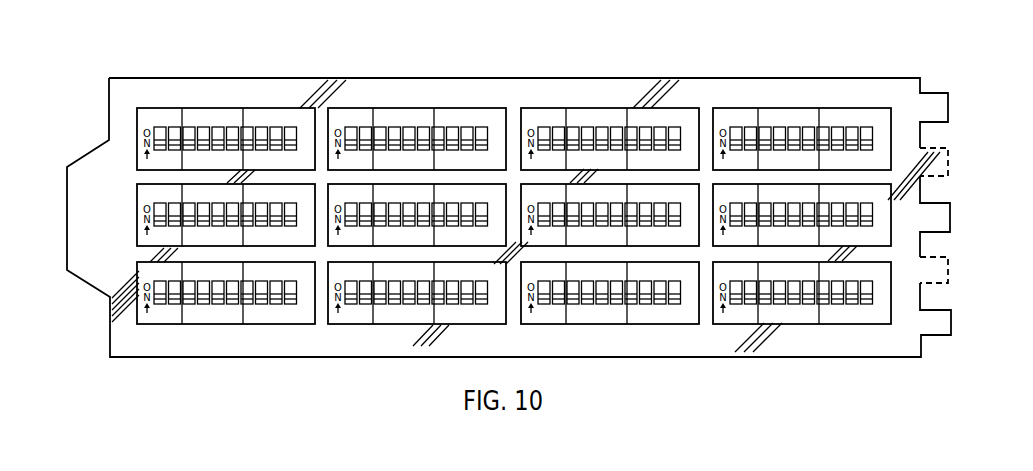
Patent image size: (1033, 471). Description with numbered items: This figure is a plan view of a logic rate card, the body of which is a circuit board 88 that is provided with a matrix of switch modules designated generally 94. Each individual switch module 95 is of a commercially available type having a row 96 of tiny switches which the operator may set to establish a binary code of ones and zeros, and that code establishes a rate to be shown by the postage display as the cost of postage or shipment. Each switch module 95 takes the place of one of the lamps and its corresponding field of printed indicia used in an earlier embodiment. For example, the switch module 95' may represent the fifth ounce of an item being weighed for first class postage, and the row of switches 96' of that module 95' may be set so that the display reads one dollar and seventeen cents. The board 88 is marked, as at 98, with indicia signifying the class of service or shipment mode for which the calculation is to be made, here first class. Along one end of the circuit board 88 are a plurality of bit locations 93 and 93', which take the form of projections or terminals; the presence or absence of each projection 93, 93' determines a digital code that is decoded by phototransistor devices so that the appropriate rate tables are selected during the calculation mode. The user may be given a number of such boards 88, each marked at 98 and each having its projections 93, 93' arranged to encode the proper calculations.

The matrix of switch modules 94 is at (128, 100).
The switch module 95 is at (501, 209).
The switch module 95' is at (95, 141).
The row of tiny switches 96 is at (107, 350).
The row of switches 96' is at (65, 299).
The indicia marking 98 is at (65, 198).
The bit location 93 is at (880, 207).
The bit location 93' is at (882, 331).
The logic rate card circuit board 88 is at (450, 355).